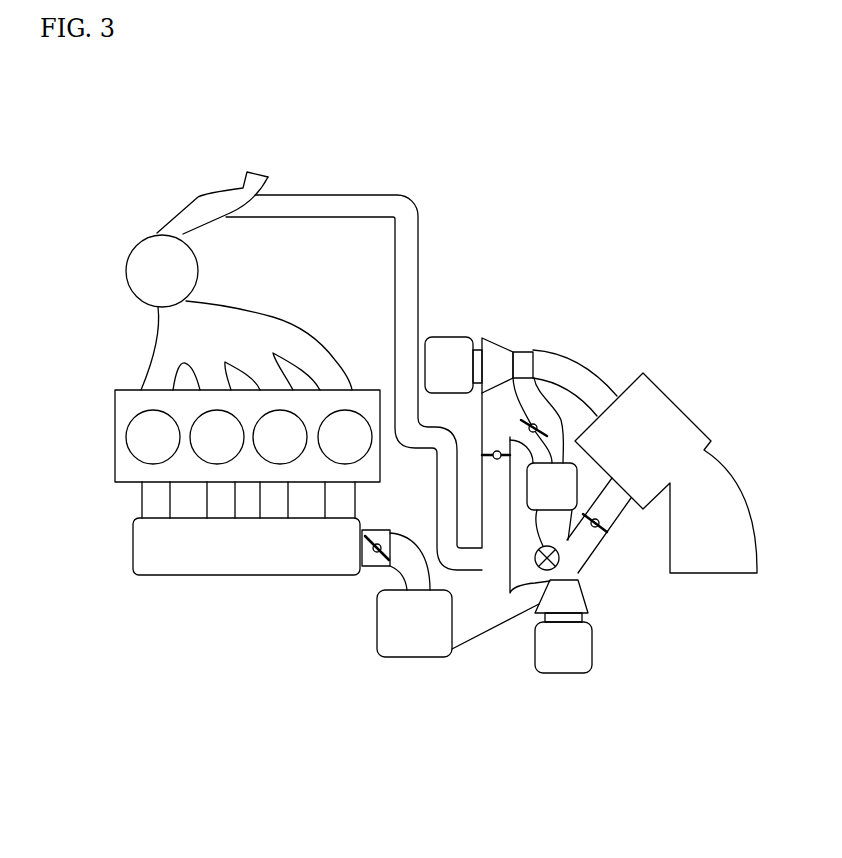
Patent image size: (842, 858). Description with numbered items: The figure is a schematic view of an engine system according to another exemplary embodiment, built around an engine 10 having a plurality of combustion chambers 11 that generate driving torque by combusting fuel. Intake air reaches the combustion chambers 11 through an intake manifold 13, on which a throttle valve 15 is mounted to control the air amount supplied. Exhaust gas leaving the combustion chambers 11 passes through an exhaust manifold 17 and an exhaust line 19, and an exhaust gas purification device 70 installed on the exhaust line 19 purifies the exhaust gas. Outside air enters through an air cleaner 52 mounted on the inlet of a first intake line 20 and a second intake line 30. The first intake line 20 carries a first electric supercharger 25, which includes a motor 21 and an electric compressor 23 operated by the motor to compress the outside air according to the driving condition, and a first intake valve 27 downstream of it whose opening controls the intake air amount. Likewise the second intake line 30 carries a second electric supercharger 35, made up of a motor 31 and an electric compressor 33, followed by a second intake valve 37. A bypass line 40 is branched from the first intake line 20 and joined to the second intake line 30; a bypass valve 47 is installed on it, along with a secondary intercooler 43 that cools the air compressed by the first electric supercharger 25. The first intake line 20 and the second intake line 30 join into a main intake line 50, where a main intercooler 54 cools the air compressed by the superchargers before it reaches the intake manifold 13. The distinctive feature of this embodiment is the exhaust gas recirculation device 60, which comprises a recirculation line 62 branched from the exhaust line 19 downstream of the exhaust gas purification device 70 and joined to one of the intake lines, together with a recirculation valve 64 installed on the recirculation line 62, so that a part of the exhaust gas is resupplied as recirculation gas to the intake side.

The engine 10 is at (95, 495).
The combustion chambers 11 is at (126, 440).
The intake manifold 13 is at (133, 545).
The throttle valve 15 is at (372, 567).
The exhaust manifold 17 is at (147, 373).
The exhaust line 19 is at (202, 200).
The first intake line 20 is at (563, 358).
The motor 21 is at (450, 337).
The electric compressor 23 is at (507, 339).
The first electric supercharger 25 is at (479, 319).
The first intake valve 27 is at (497, 459).
The second intake line 30 is at (625, 517).
The motor 31 is at (563, 669).
The electric compressor 33 is at (584, 598).
The second electric supercharger 35 is at (596, 669).
The second intake valve 37 is at (600, 537).
The bypass line 40 is at (541, 568).
The secondary intercooler 43 is at (597, 406).
The bypass valve 47 is at (533, 424).
The main intake line 50 is at (392, 570).
The air cleaner 52 is at (685, 405).
The main intercooler 54 is at (415, 657).
The exhaust gas recirculation device 60 is at (542, 766).
The recirculation line 62 is at (467, 562).
The recirculation valve 64 is at (558, 566).
The exhaust gas purification device 70 is at (126, 270).